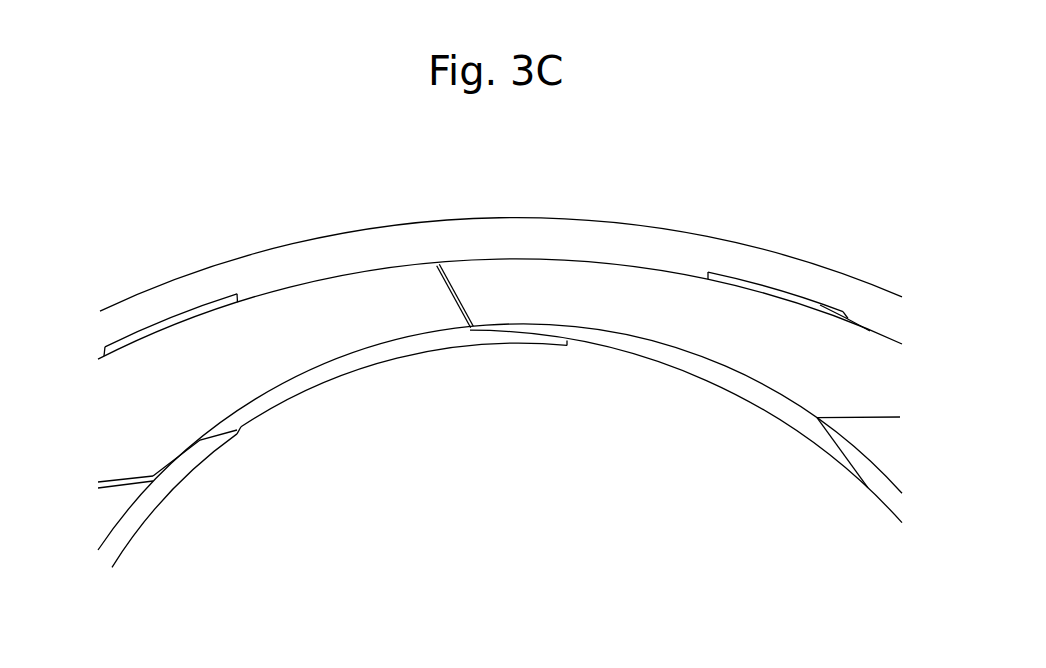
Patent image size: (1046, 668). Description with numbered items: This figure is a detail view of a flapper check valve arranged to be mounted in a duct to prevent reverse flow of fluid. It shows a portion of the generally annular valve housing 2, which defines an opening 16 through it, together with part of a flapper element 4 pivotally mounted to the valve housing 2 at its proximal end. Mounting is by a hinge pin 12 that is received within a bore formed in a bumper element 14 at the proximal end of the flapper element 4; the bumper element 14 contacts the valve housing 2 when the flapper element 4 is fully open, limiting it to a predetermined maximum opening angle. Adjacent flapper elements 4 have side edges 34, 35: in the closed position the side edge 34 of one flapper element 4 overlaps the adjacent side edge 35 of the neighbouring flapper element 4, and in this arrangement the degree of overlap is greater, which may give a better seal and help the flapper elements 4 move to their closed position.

The valve housing 2 is at (467, 232).
The flapper element 4 is at (662, 358).
The hinge pin 12 is at (843, 312).
The bumper element 14 is at (764, 282).
The opening 16 is at (517, 481).
The side edge 34 is at (203, 440).
The side edge 35 is at (537, 343).